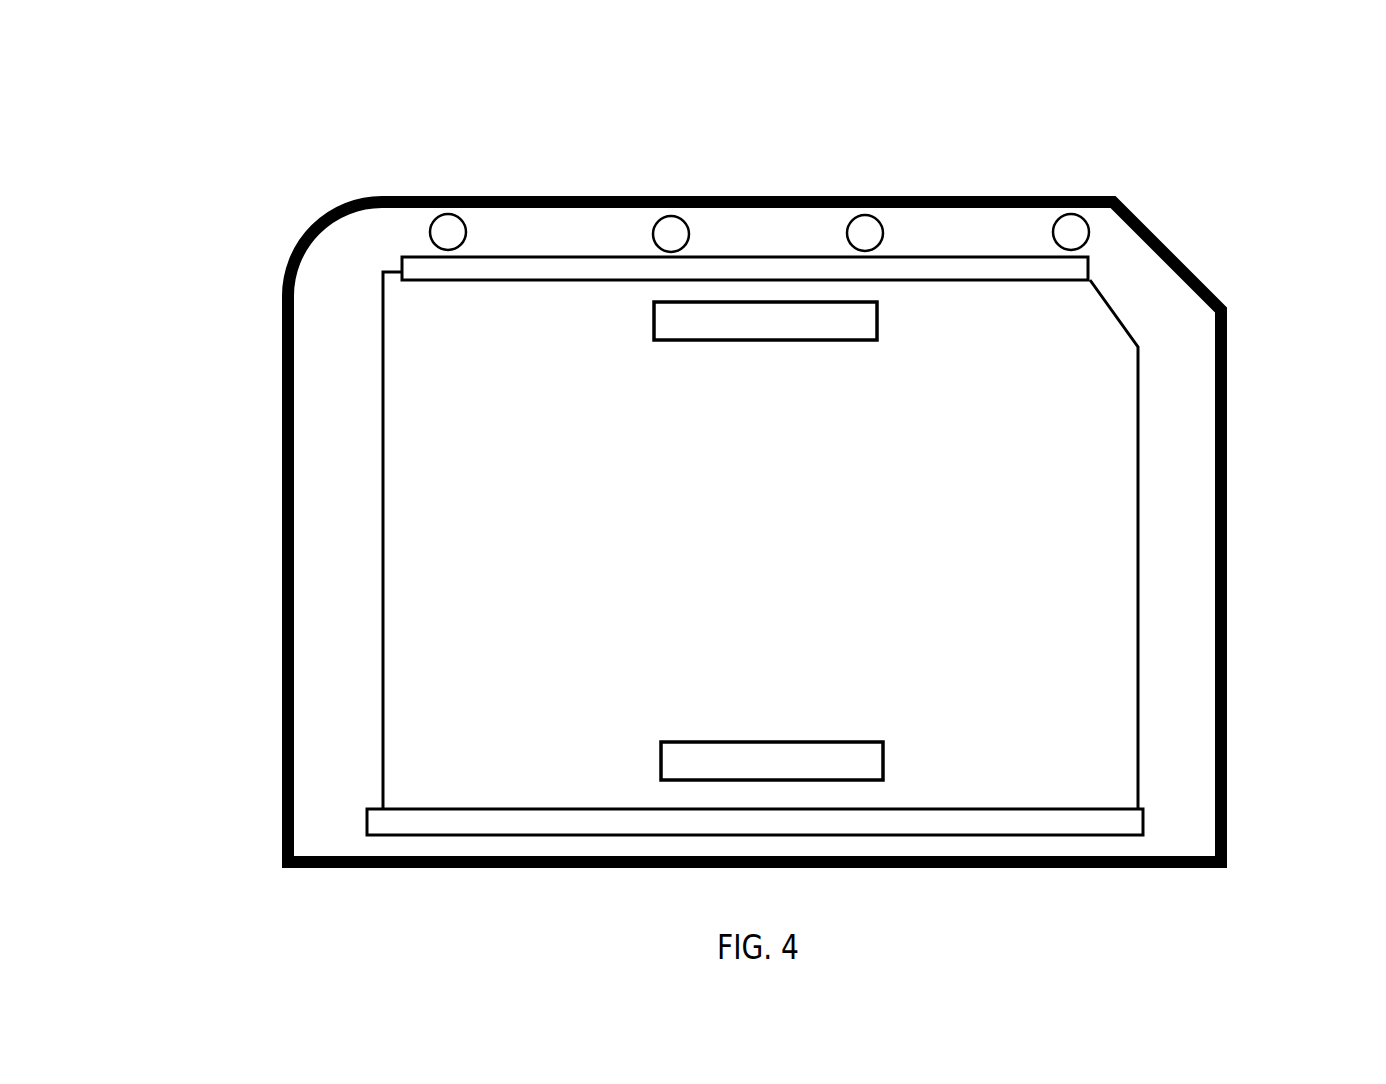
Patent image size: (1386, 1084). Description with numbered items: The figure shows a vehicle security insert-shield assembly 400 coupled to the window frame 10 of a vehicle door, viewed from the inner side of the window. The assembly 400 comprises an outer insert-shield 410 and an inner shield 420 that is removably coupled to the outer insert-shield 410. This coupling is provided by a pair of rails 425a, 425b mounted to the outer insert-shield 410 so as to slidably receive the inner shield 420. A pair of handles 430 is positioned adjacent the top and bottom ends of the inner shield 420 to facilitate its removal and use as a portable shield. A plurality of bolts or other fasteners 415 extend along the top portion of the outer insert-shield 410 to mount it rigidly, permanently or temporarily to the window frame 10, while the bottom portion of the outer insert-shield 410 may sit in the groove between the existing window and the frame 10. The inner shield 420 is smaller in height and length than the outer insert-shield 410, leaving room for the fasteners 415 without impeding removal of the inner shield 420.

The vehicle security insert-shield assembly 400 is at (768, 493).
The window frame 10 is at (1213, 297).
The outer insert-shield 410 is at (310, 740).
The fasteners 415 is at (442, 227).
The inner shield 420 is at (1100, 610).
The rail 425a is at (1058, 826).
The rail 425b is at (955, 272).
The handles 430 is at (763, 297).